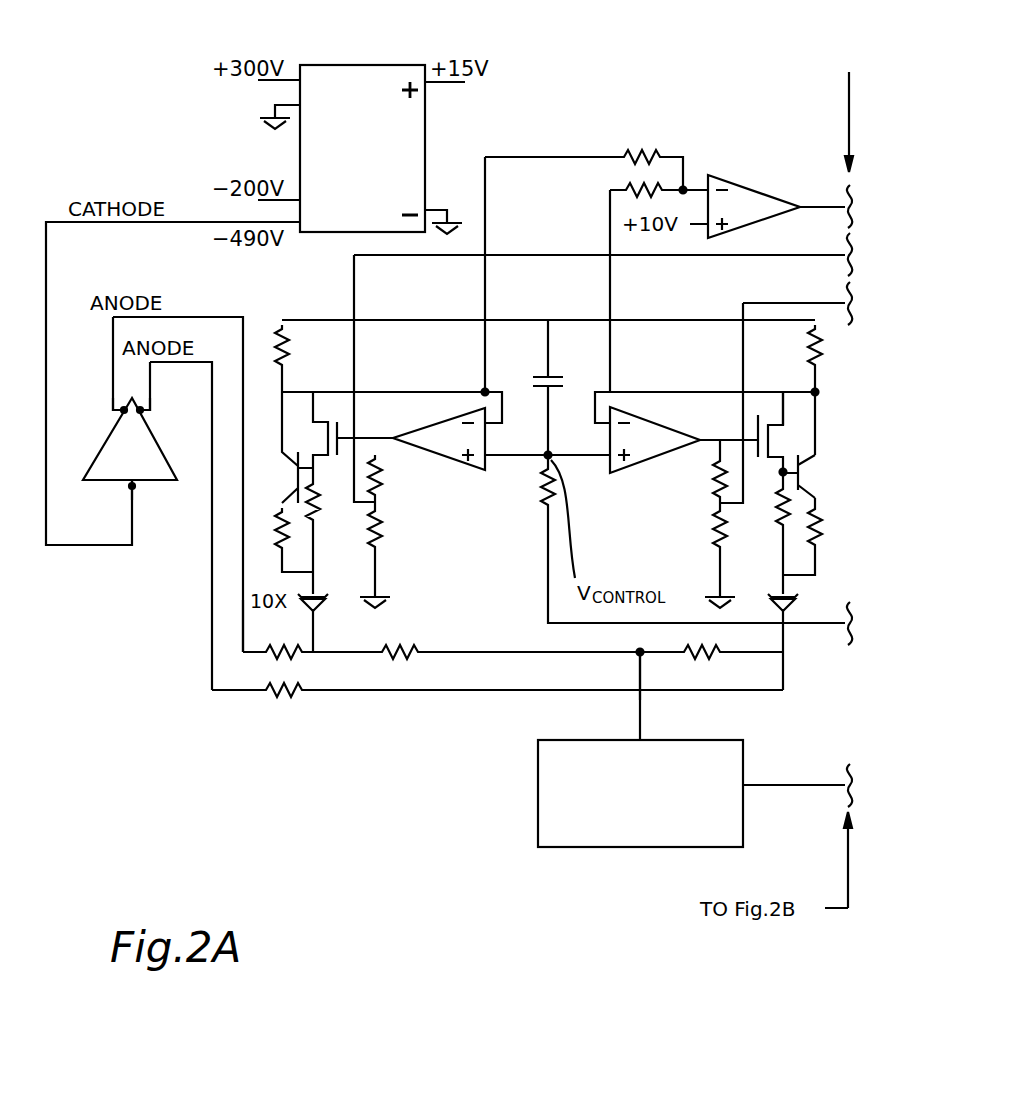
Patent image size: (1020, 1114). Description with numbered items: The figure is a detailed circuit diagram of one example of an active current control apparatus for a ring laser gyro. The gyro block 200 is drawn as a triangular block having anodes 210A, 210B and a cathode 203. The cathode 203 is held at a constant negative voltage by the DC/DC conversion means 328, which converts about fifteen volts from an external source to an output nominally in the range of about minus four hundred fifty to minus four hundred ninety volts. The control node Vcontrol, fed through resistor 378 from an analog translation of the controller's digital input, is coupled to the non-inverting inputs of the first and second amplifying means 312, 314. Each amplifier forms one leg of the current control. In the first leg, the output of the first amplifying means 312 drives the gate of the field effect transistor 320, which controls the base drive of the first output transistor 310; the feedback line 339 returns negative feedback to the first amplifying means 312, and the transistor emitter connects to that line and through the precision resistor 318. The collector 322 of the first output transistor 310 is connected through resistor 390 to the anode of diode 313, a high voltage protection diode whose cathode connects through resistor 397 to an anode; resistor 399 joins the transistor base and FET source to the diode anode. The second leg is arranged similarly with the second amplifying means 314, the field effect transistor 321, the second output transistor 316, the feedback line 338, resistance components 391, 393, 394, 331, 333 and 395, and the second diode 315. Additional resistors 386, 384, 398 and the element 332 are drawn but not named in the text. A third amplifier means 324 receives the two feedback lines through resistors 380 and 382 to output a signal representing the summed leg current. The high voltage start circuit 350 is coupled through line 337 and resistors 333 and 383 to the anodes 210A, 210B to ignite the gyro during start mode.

The DC/DC conversion means 328 is at (423, 72).
The resistor 380 is at (658, 152).
The resistor 382 is at (619, 188).
The third amplifier means 324 is at (748, 190).
The precision resistor 318 is at (290, 370).
The feedback line 339 is at (405, 392).
The field effect transistor 320 is at (346, 430).
The first output transistor 310 is at (296, 478).
The collector 322 is at (282, 503).
The resistor 399 is at (320, 510).
The diode 313 is at (328, 600).
The resistor 386 is at (378, 483).
The resistor 384 is at (378, 540).
The first amplifying means 312 is at (478, 470).
The resistor 378 is at (545, 513).
The resistor 395 is at (556, 374).
The feedback line 338 is at (645, 393).
The second amplifying means 314 is at (614, 473).
The field effect transistor 321 is at (758, 432).
The precision resistor 331 is at (805, 372).
The transistor 332 is at (805, 480).
The second output transistor 316 is at (805, 472).
The resistance component 391 is at (718, 478).
The resistance component 393 is at (716, 545).
The resistor 394 is at (780, 514).
The second diode 315 is at (790, 615).
The resistor 333 is at (710, 659).
The line 337 is at (639, 712).
The high voltage start circuit 350 is at (622, 834).
The resistor 397 is at (285, 660).
The resistor 383 is at (410, 660).
The resistor 398 is at (285, 698).
The resistor 390 is at (242, 602).
The gyro block 200 is at (130, 443).
The cathode 203 is at (130, 488).
The anode 210A is at (143, 413).
The anode 210B is at (122, 411).